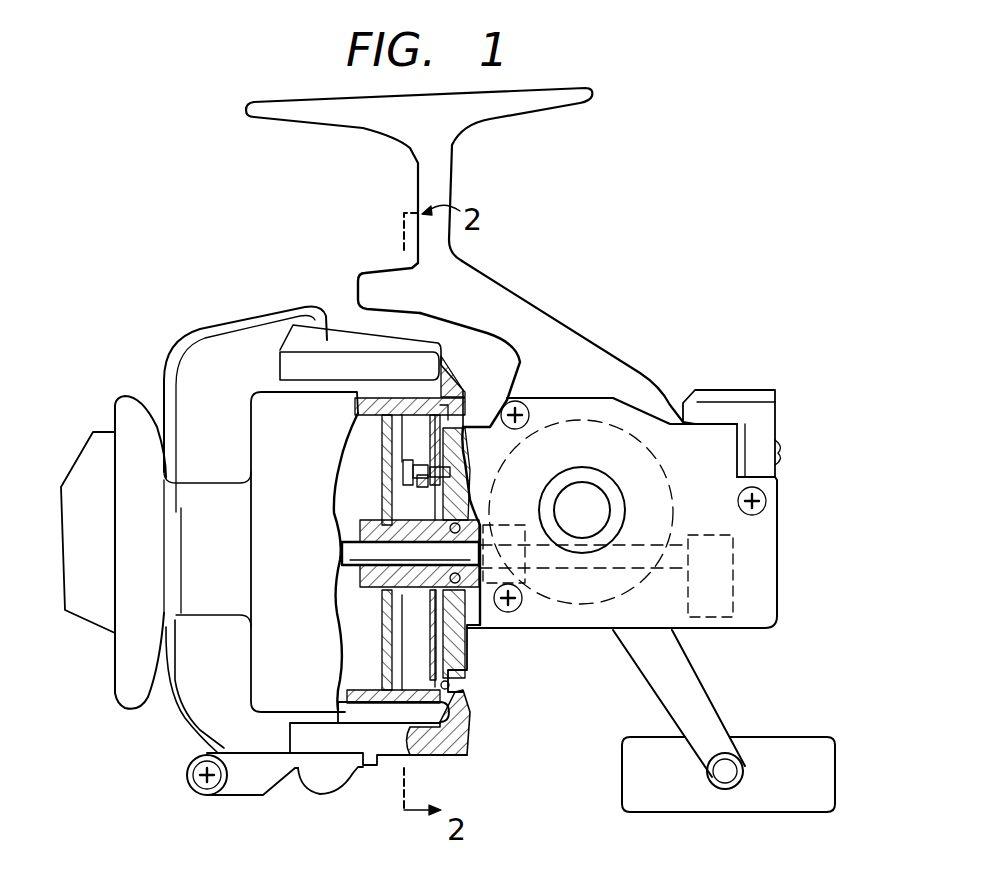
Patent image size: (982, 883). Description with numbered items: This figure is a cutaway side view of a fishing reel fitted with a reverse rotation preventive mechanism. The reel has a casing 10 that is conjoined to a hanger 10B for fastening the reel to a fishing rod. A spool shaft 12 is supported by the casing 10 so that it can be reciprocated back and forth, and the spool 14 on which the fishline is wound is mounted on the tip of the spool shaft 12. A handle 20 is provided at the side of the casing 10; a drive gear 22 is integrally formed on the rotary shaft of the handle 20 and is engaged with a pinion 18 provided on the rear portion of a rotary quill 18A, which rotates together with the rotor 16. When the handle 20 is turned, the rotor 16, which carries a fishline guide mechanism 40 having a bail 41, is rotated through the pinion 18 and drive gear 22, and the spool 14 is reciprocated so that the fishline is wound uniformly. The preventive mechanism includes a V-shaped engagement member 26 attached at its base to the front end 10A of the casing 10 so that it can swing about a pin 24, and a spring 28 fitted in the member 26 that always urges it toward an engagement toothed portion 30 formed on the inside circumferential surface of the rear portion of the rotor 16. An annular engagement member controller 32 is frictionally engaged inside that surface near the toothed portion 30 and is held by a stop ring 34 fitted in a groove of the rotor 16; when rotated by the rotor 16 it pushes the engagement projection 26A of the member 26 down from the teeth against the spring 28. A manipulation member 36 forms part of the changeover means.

The casing 10 is at (578, 343).
The front end 10A is at (466, 650).
The hanger 10B is at (495, 112).
The spool shaft 12 is at (333, 498).
The spool 14 is at (127, 408).
The rotor 16 is at (327, 740).
The pinion 18 is at (527, 575).
The rotary quill 18A is at (380, 680).
The handle 20 is at (700, 700).
The drive gear 22 is at (627, 433).
The pin 24 is at (372, 442).
The V-shaped engagement member 26 is at (375, 480).
The engagement projection 26A is at (485, 398).
The spring 28 is at (403, 470).
The engagement toothed portion 30 is at (412, 400).
The engagement member controller 32 is at (450, 687).
The stop ring 34 is at (469, 746).
The manipulation member 36 is at (750, 390).
The fishline guide mechanism 40 is at (228, 805).
The bail 41 is at (177, 723).